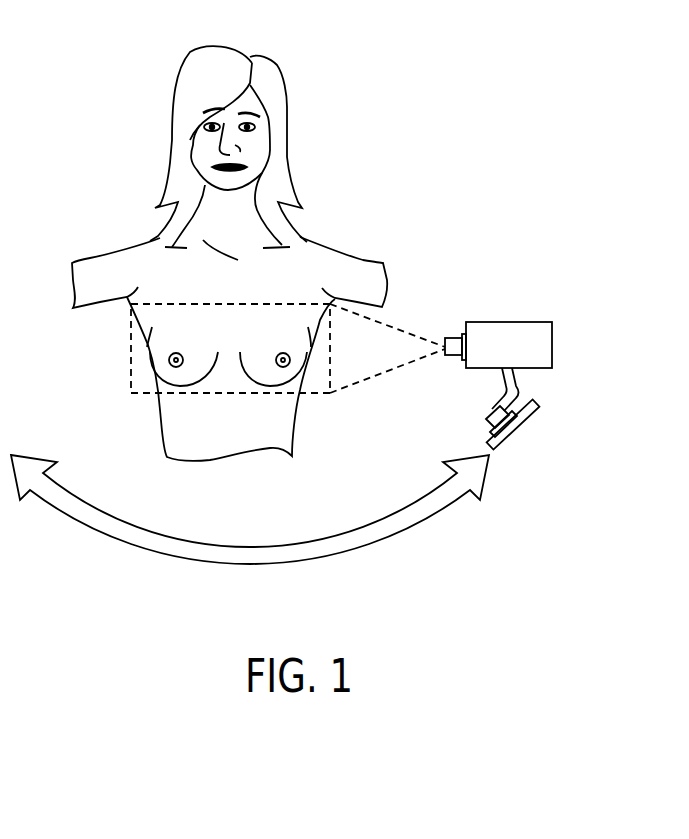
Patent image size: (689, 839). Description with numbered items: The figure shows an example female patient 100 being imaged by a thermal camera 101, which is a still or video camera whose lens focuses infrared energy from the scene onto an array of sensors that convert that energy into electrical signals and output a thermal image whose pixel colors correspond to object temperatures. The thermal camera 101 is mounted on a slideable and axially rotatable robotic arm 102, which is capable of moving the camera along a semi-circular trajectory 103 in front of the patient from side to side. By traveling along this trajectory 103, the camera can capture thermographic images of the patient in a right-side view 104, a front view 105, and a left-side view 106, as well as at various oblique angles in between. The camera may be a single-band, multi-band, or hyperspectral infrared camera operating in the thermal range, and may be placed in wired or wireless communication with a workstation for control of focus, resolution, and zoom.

The subject / patient 100 is at (272, 60).
The thermal camera 101 is at (553, 341).
The slideable and axially rotatable robotic arm 102 is at (521, 388).
The semi-circular trajectory 103 is at (253, 566).
The right-side view 104 is at (335, 361).
The front view 105 is at (217, 397).
The left-side view 106 is at (125, 365).